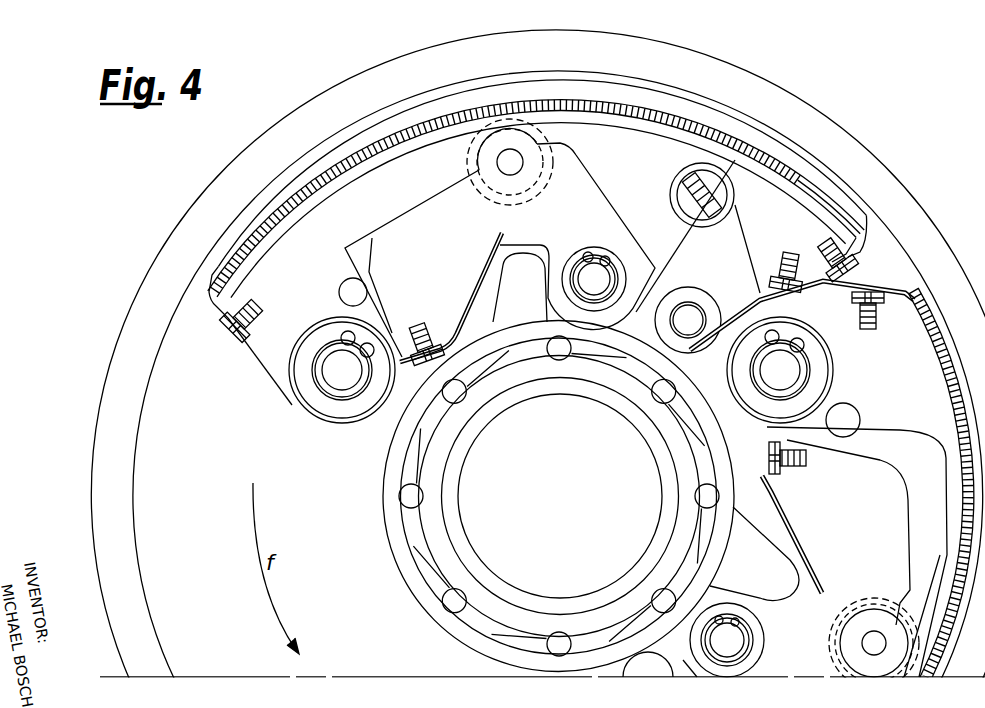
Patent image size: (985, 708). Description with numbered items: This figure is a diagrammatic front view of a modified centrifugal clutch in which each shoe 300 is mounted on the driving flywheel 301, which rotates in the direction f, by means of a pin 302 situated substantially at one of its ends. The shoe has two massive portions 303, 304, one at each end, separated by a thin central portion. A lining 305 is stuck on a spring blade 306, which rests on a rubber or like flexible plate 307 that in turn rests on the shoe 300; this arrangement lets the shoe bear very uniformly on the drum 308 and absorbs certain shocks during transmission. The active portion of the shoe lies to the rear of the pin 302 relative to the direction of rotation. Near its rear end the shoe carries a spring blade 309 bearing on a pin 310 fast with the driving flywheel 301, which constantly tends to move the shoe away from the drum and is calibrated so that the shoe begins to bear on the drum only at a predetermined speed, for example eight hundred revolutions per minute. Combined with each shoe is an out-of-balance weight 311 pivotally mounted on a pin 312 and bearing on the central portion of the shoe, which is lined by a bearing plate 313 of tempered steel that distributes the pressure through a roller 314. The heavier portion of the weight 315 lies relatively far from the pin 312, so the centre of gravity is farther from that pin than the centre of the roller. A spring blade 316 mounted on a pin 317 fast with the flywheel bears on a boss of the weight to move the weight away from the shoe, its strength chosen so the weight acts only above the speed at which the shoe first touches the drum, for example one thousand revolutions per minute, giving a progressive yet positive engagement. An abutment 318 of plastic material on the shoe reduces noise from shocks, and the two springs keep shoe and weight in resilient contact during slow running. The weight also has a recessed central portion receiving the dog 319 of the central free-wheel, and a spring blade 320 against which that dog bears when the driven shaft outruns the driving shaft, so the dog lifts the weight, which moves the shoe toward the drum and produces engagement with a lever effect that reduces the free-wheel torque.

The shoe 300 is at (357, 165).
The driving flywheel 301 is at (140, 509).
The pin 302 is at (323, 380).
The massive portion 303 is at (272, 345).
The massive portion 304 is at (812, 220).
The lining 305 is at (302, 170).
The spring blade 306 is at (253, 220).
The flexible plate 307 is at (207, 262).
The drum 308 is at (778, 135).
The spring blade 309 is at (730, 308).
The pin 310 is at (688, 322).
The out-of-balance weight 311 is at (412, 207).
The pin 312 is at (592, 273).
The bearing plate 313 is at (593, 127).
The roller 314 is at (480, 157).
The heavier portion of the weight 315 is at (420, 316).
The spring blade 316 is at (673, 245).
The pin 317 is at (722, 193).
The abutment 318 is at (345, 290).
The dog 319 is at (500, 300).
The spring blade 320 is at (493, 252).